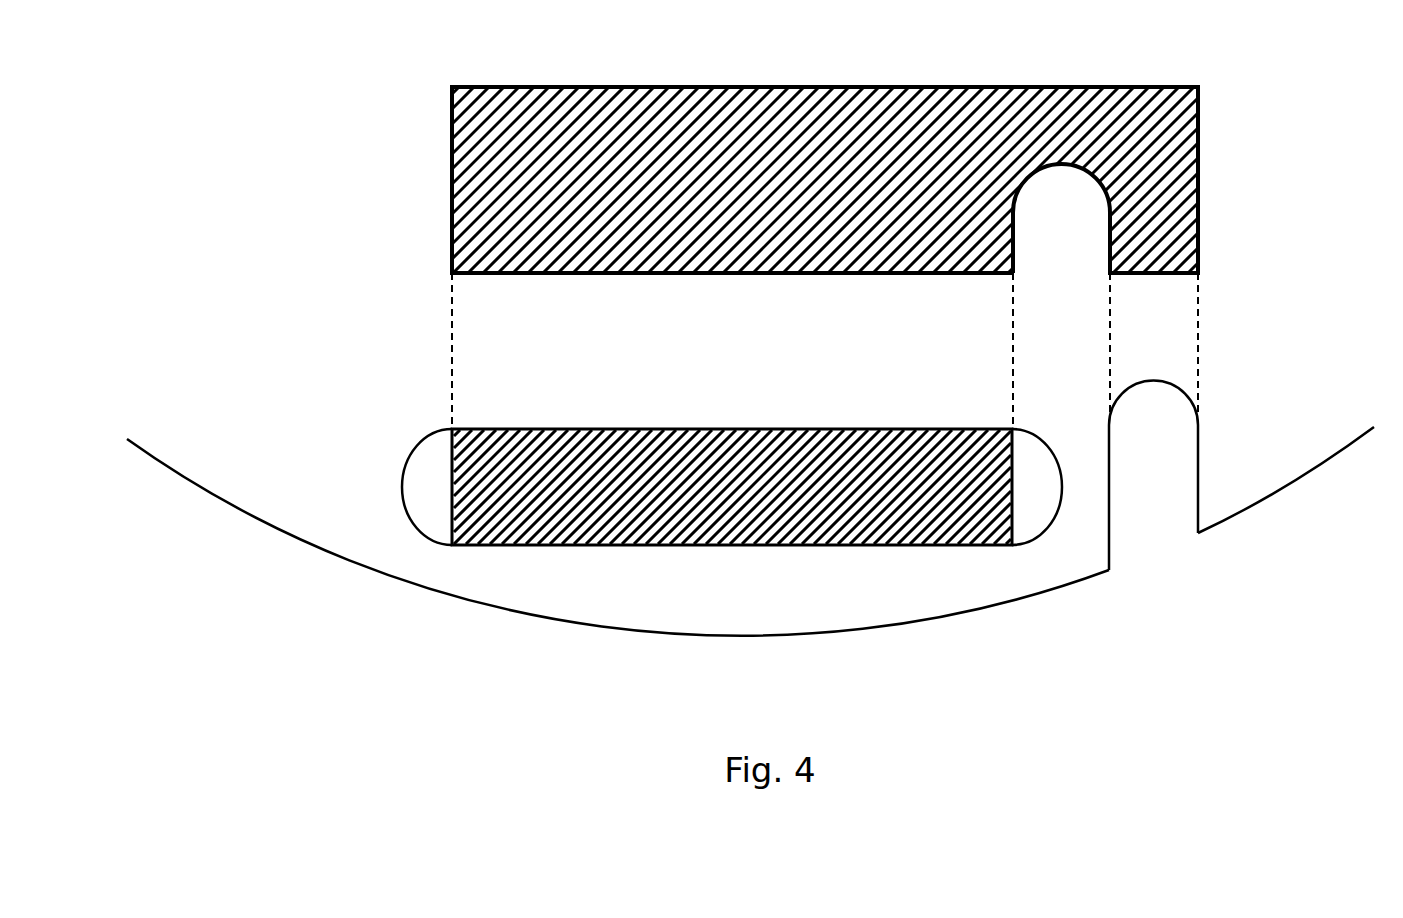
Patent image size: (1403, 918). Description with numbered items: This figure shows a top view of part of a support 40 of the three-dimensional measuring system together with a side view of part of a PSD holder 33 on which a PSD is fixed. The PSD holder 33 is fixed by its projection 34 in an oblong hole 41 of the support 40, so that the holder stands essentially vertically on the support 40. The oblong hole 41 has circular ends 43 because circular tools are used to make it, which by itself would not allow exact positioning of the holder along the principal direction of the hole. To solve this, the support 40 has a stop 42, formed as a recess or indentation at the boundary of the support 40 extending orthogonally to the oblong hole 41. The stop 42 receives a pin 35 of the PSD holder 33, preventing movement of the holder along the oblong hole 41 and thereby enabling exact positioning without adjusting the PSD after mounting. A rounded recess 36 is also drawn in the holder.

The PSD holder 33 is at (453, 433).
The projection 34 is at (855, 222).
The pin 35 is at (1157, 238).
The rounded recess 36 is at (1065, 204).
The support 40 is at (648, 590).
The oblong hole 41 is at (740, 420).
The stop 42 is at (1151, 493).
The circular ends 43 is at (435, 483).